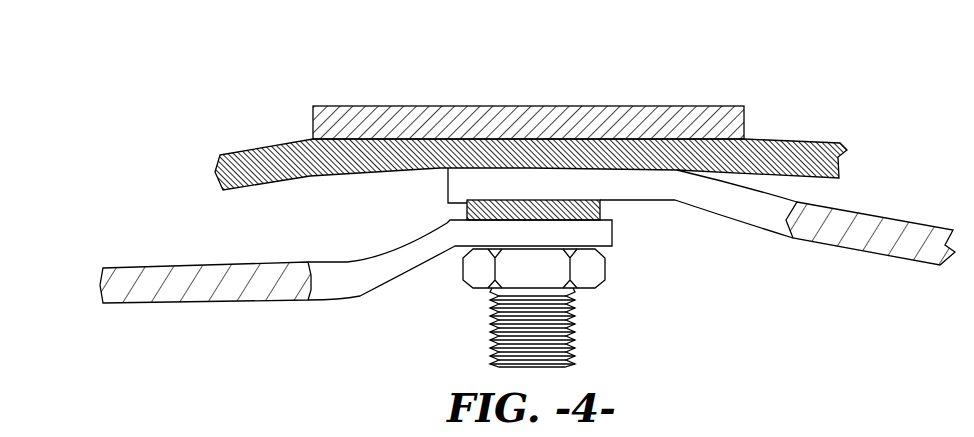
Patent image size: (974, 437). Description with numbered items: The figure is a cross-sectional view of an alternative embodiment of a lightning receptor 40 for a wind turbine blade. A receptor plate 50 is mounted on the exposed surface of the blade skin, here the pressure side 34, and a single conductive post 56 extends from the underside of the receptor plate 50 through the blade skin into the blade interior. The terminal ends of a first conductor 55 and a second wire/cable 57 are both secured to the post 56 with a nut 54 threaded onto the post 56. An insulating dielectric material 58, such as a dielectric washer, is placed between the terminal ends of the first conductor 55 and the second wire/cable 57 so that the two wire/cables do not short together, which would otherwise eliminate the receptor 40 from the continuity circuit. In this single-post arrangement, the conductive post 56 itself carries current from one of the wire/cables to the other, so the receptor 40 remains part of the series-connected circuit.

The lightning receptor 40 is at (813, 68).
The pressure side 34 is at (815, 142).
The receptor plate 50 is at (352, 104).
The insulating dielectric material 58 is at (600, 208).
The nut 54 is at (468, 290).
The post 56 is at (576, 330).
The first conductor 55 is at (352, 262).
The second wire/cable 57 is at (748, 228).